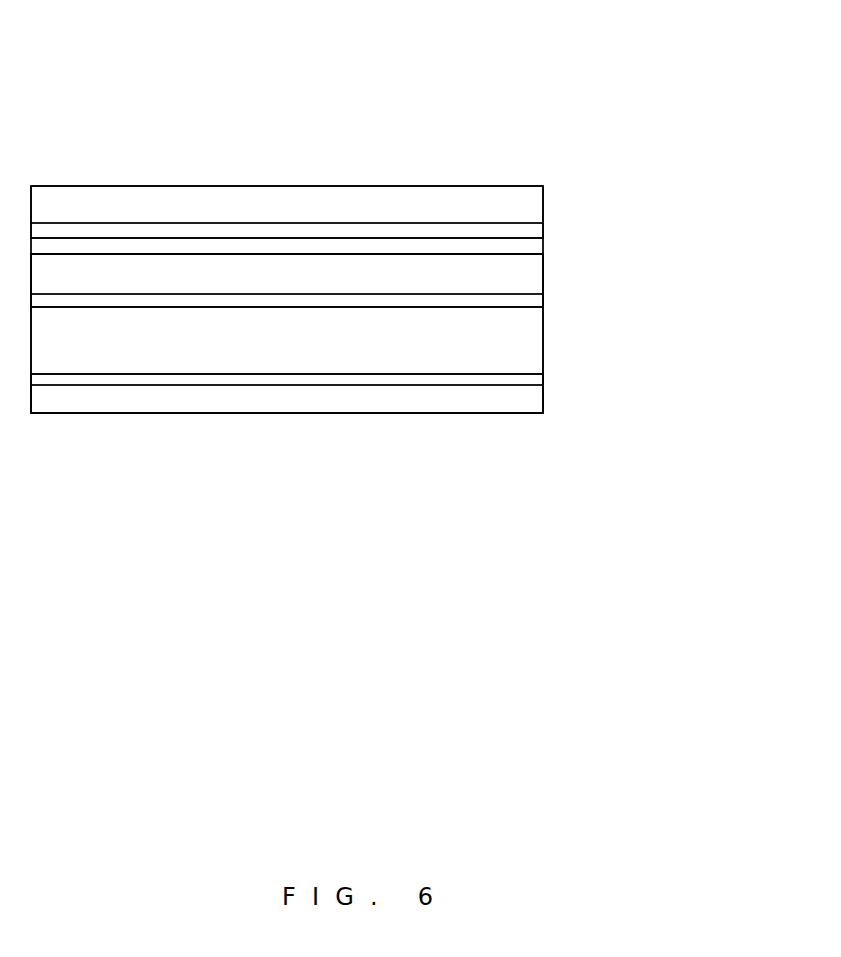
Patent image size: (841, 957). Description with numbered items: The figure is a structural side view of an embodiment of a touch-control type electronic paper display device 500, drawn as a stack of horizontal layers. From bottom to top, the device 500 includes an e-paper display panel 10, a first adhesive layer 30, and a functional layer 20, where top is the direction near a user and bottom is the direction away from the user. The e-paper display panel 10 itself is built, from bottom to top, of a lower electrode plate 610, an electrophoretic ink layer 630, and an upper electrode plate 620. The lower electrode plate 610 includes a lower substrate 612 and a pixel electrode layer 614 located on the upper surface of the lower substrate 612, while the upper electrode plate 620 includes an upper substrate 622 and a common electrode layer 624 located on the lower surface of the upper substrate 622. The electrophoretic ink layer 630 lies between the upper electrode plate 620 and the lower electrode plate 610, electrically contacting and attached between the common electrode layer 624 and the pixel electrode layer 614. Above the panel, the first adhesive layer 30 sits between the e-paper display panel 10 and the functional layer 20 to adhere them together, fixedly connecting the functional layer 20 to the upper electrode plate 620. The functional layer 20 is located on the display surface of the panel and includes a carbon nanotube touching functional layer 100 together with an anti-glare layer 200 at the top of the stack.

The electronic paper display device 500 is at (229, 78).
The functional layer 20 is at (630, 181).
The anti-glare layer 200 is at (532, 203).
The carbon nanotube touching functional layer 100 is at (538, 230).
The first adhesive layer 30 is at (533, 247).
The e-paper display panel 10 is at (735, 278).
The upper electrode plate 620 is at (660, 267).
The upper substrate 622 is at (530, 282).
The common electrode layer 624 is at (530, 300).
The electrophoretic ink layer 630 is at (518, 348).
The lower electrode plate 610 is at (669, 367).
The pixel electrode layer 614 is at (538, 380).
The lower substrate 612 is at (532, 402).